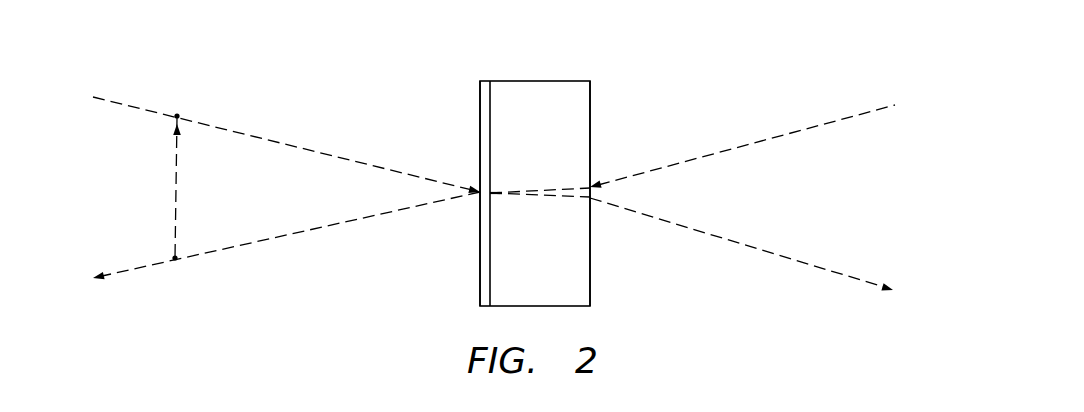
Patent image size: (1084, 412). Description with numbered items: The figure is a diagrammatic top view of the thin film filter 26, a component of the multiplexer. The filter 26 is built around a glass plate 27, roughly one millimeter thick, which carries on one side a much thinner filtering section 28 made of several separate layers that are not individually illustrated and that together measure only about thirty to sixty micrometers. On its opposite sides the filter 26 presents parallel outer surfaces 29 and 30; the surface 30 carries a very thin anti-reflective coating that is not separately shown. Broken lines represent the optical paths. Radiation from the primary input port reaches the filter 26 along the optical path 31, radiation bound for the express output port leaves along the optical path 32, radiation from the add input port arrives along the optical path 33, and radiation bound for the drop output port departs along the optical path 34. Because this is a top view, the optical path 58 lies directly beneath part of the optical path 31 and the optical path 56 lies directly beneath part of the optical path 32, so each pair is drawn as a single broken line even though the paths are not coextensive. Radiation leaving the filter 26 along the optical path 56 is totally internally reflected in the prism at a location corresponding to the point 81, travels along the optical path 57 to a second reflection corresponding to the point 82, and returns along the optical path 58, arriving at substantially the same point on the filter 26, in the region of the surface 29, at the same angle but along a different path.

The filter 26 is at (592, 81).
The glass plate 27 is at (533, 92).
The filtering section 28 is at (483, 105).
The outer surface 29 is at (480, 265).
The outer surface 30 is at (590, 268).
The optical path 31 is at (286, 141).
The optical path 32 is at (286, 241).
The optical path 33 is at (797, 132).
The optical path 34 is at (797, 262).
The optical path 56 is at (267, 240).
The optical path 57 is at (177, 197).
The optical path 58 is at (267, 140).
The point 81 is at (175, 267).
The point 82 is at (177, 112).